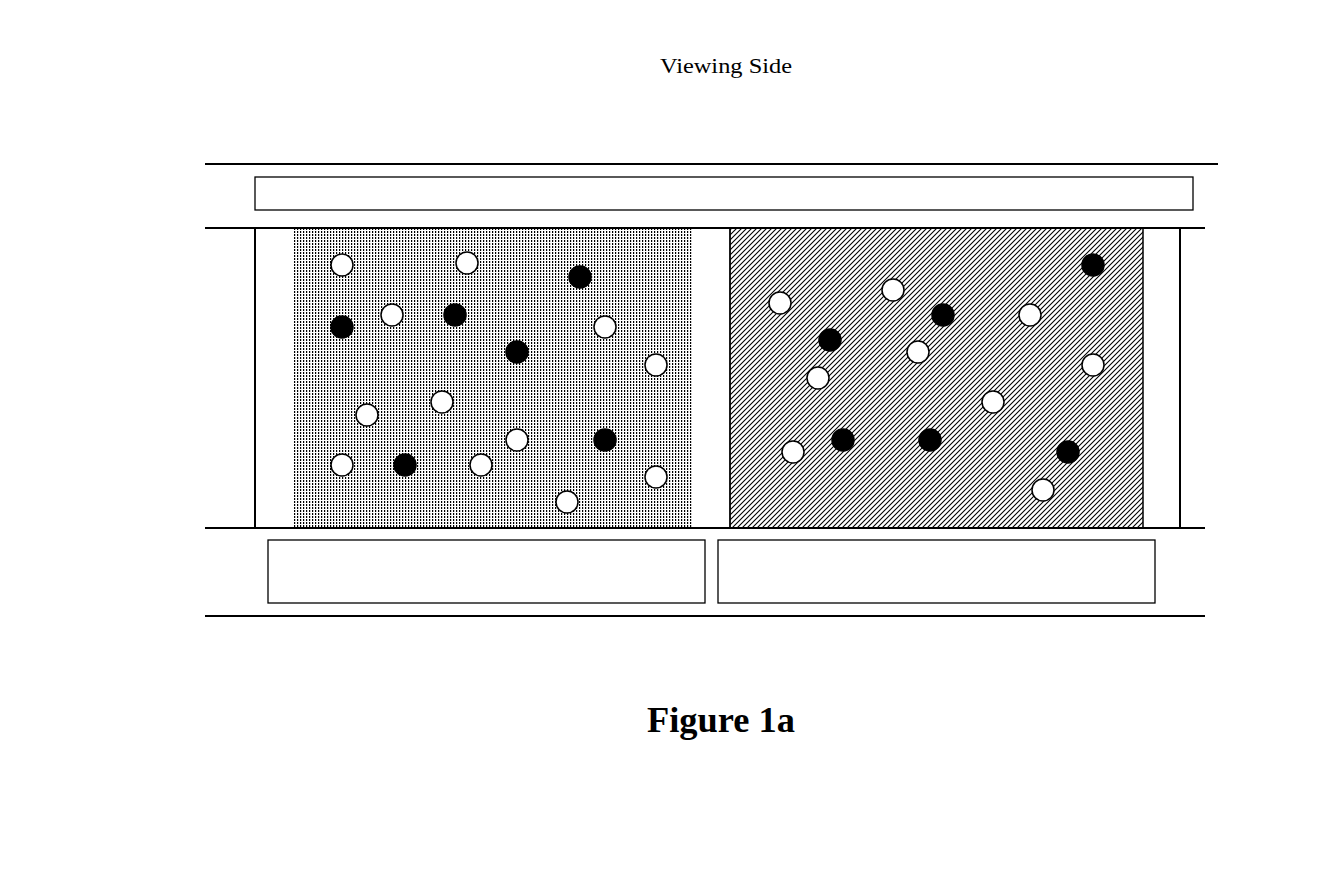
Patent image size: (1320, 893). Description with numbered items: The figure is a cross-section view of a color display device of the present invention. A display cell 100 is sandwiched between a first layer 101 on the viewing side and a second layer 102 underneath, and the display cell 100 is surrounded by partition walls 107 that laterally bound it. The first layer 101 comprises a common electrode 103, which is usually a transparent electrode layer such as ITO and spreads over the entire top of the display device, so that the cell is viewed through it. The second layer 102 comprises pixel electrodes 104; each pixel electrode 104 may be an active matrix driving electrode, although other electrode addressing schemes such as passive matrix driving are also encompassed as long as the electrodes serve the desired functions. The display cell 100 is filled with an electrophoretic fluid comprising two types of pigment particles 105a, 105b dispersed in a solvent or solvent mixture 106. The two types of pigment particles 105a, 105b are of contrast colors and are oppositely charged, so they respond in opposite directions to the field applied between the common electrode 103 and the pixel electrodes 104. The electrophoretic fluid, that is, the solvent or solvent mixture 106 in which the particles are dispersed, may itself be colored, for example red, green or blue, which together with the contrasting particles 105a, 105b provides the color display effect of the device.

The display cell 100 is at (218, 352).
The first layer 101 is at (210, 189).
The second layer 102 is at (222, 577).
The common electrode 103 is at (724, 193).
The pixel electrode 104 is at (711, 571).
The pigment particles 105a is at (1002, 391).
The pigment particles 105b is at (1115, 264).
The solvent or solvent mixture 106 is at (1128, 316).
The partition wall 107 is at (1165, 465).